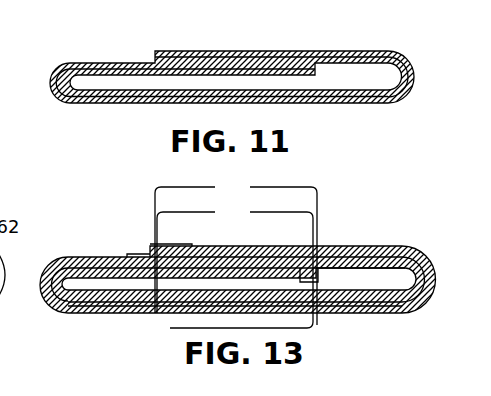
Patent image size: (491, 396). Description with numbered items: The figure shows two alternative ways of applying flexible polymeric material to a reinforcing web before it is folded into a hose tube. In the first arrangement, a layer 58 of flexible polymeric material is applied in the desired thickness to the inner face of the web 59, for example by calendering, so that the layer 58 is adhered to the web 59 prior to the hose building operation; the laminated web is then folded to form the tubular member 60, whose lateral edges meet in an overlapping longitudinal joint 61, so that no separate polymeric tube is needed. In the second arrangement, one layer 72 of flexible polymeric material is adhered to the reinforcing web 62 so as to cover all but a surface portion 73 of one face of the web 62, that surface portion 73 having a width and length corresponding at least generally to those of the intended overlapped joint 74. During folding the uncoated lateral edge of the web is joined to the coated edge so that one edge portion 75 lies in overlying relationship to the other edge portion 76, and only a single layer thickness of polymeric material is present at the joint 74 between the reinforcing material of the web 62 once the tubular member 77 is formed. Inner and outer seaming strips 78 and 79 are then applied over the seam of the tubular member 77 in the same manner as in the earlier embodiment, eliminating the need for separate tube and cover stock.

In FIG. 11, the layer 58 is at (132, 74).
In FIG. 11, the web 59 is at (365, 102).
In FIG. 11, the tubular member 60 is at (118, 60).
In FIG. 11, the overlapping longitudinal joint 61 is at (255, 51).
In FIG. 13, the reinforcing web 62 is at (88, 304).
In FIG. 13, the layer 72 is at (80, 257).
In FIG. 13, the surface portion 73 is at (172, 328).
In FIG. 13, the overlapped joint 74 is at (245, 270).
In FIG. 13, the edge portion 75 is at (236, 251).
In FIG. 13, the edge portion 76 is at (235, 264).
In FIG. 13, the tubular member 77 is at (364, 243).
In FIG. 13, the inner seaming strip 78 is at (338, 269).
In FIG. 13, the outer seaming strip 79 is at (147, 256).